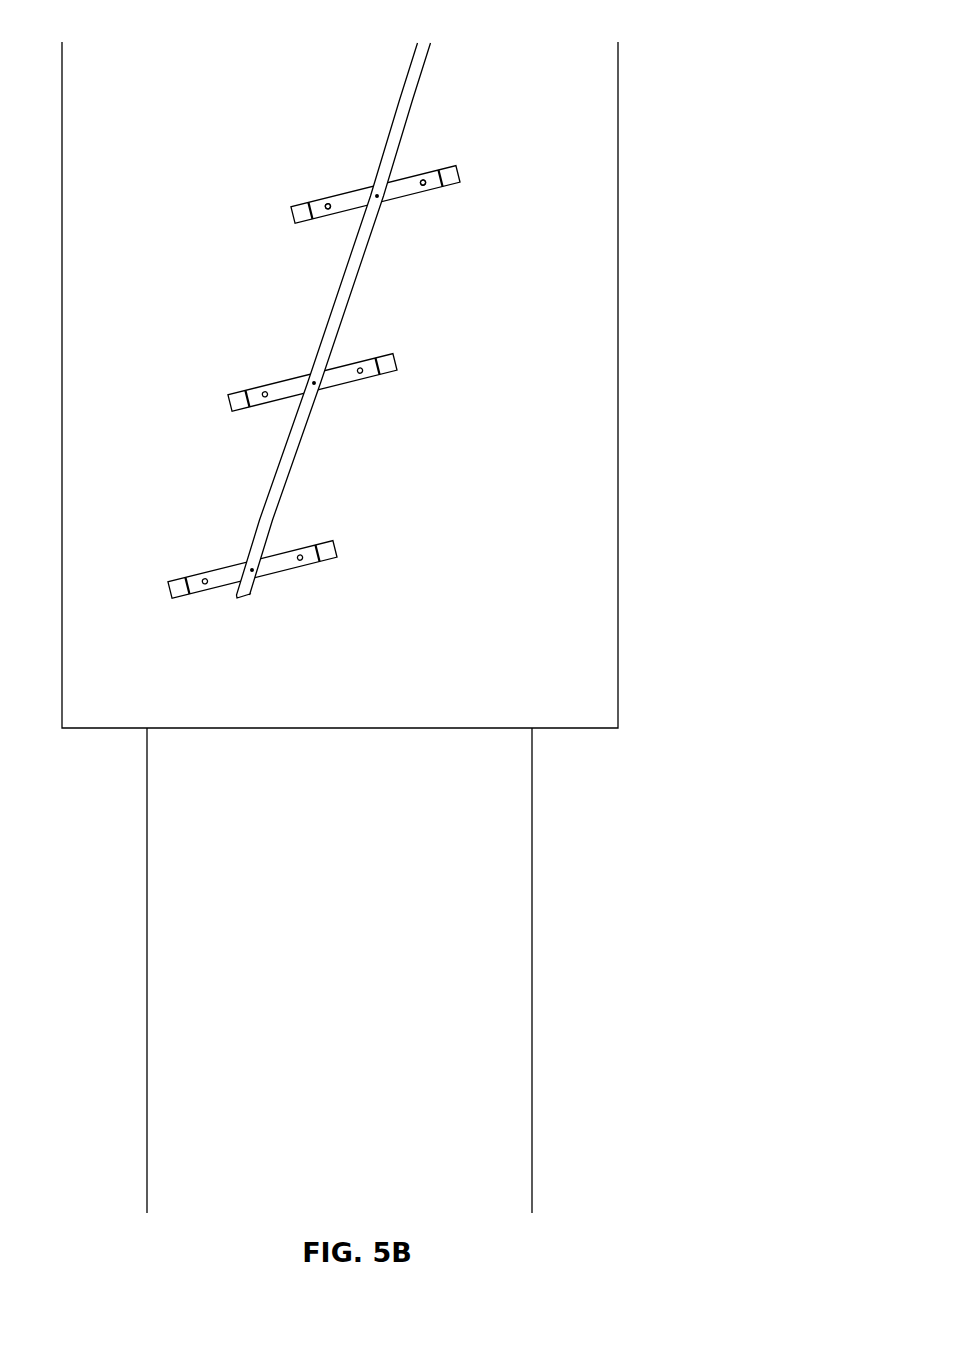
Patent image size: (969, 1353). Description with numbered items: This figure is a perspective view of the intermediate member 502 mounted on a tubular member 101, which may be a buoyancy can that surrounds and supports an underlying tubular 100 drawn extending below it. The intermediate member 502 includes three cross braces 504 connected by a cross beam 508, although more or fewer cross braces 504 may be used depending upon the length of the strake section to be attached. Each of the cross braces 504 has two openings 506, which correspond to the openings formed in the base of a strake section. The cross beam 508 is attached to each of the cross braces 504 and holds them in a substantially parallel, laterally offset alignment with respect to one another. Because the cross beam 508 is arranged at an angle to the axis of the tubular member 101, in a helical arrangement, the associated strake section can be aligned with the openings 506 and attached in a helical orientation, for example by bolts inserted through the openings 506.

The underlying tubular 100 is at (547, 939).
The tubular member 101 is at (632, 364).
The intermediate member 502 is at (564, 198).
The cross braces 504 is at (179, 571).
The openings 506 is at (399, 180).
The cross beam 508 is at (378, 129).